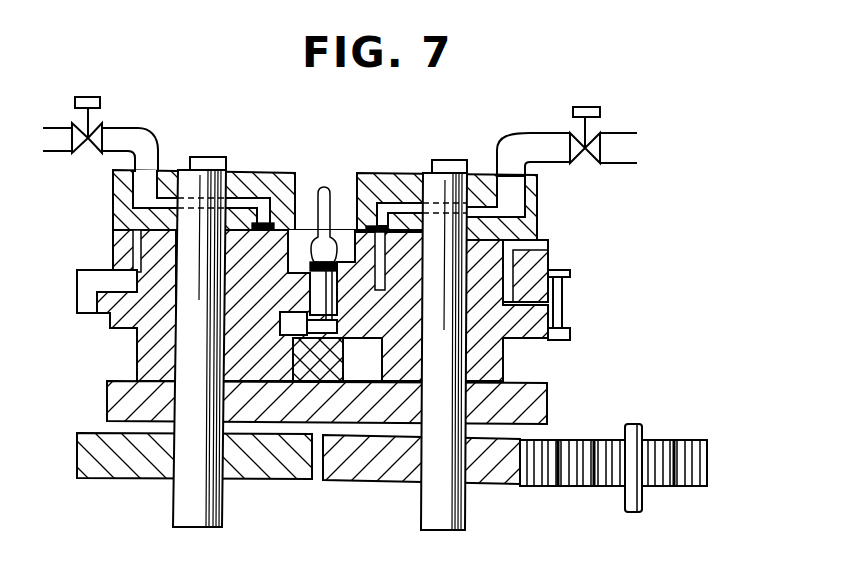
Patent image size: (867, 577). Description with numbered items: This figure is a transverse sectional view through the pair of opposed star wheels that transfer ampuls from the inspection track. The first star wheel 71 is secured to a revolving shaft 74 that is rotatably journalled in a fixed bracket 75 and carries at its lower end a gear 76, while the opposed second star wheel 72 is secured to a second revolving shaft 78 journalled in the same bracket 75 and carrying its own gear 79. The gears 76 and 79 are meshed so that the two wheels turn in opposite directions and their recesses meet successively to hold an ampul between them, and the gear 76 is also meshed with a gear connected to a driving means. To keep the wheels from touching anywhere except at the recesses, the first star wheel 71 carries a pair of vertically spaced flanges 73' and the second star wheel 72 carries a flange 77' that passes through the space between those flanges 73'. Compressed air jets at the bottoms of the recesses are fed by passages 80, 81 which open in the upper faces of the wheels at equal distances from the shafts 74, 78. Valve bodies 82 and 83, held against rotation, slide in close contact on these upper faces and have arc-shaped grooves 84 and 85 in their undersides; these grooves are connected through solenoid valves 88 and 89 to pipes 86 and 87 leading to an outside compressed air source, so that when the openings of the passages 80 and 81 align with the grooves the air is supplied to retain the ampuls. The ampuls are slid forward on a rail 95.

The first star wheel 71 is at (543, 267).
The second star wheel 72 is at (121, 328).
The vertically spaced flanges 73' is at (464, 305).
The revolving shaft 74 is at (422, 516).
The fixed bracket 75 is at (546, 403).
The gear 76 is at (495, 481).
The flange 77' is at (243, 305).
The revolving shaft 78 is at (173, 516).
The gear 79 is at (260, 479).
The passage 80 is at (530, 307).
The passage 81 is at (130, 294).
The valve body 82 is at (537, 237).
The valve body 83 is at (273, 175).
The arc-shaped groove 84 is at (356, 228).
The arc-shaped groove 85 is at (229, 229).
The pipe 86 is at (535, 137).
The pipe 87 is at (147, 143).
The solenoid valve 88 is at (582, 163).
The solenoid valve 89 is at (92, 128).
The rail 95 is at (315, 370).